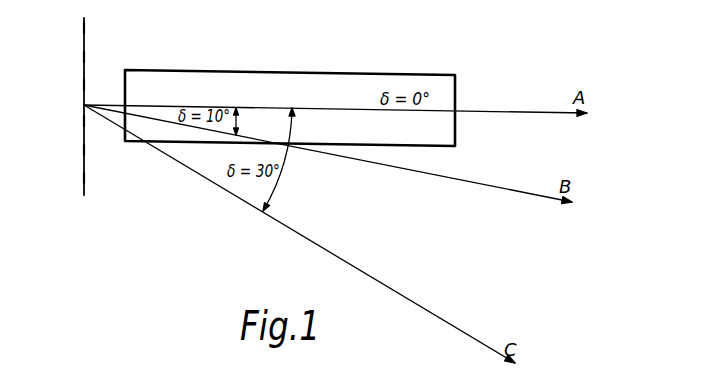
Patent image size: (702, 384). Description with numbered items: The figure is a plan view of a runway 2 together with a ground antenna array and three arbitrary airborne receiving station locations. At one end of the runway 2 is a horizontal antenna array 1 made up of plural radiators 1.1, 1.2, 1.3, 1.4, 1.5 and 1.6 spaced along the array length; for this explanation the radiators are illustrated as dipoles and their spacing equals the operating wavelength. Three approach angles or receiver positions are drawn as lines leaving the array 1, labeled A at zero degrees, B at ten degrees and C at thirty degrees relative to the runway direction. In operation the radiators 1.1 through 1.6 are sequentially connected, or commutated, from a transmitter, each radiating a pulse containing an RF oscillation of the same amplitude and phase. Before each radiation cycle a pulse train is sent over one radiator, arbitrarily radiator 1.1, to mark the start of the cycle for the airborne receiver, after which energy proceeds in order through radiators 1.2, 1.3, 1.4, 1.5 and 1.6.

The horizontal antenna array 1 is at (83, 203).
The radiator 1.1 is at (84, 28).
The radiator 1.2 is at (84, 57).
The radiator 1.3 is at (84, 85).
The radiator 1.4 is at (84, 121).
The radiator 1.5 is at (84, 150).
The radiator 1.6 is at (84, 178).
The runway 2 is at (456, 53).